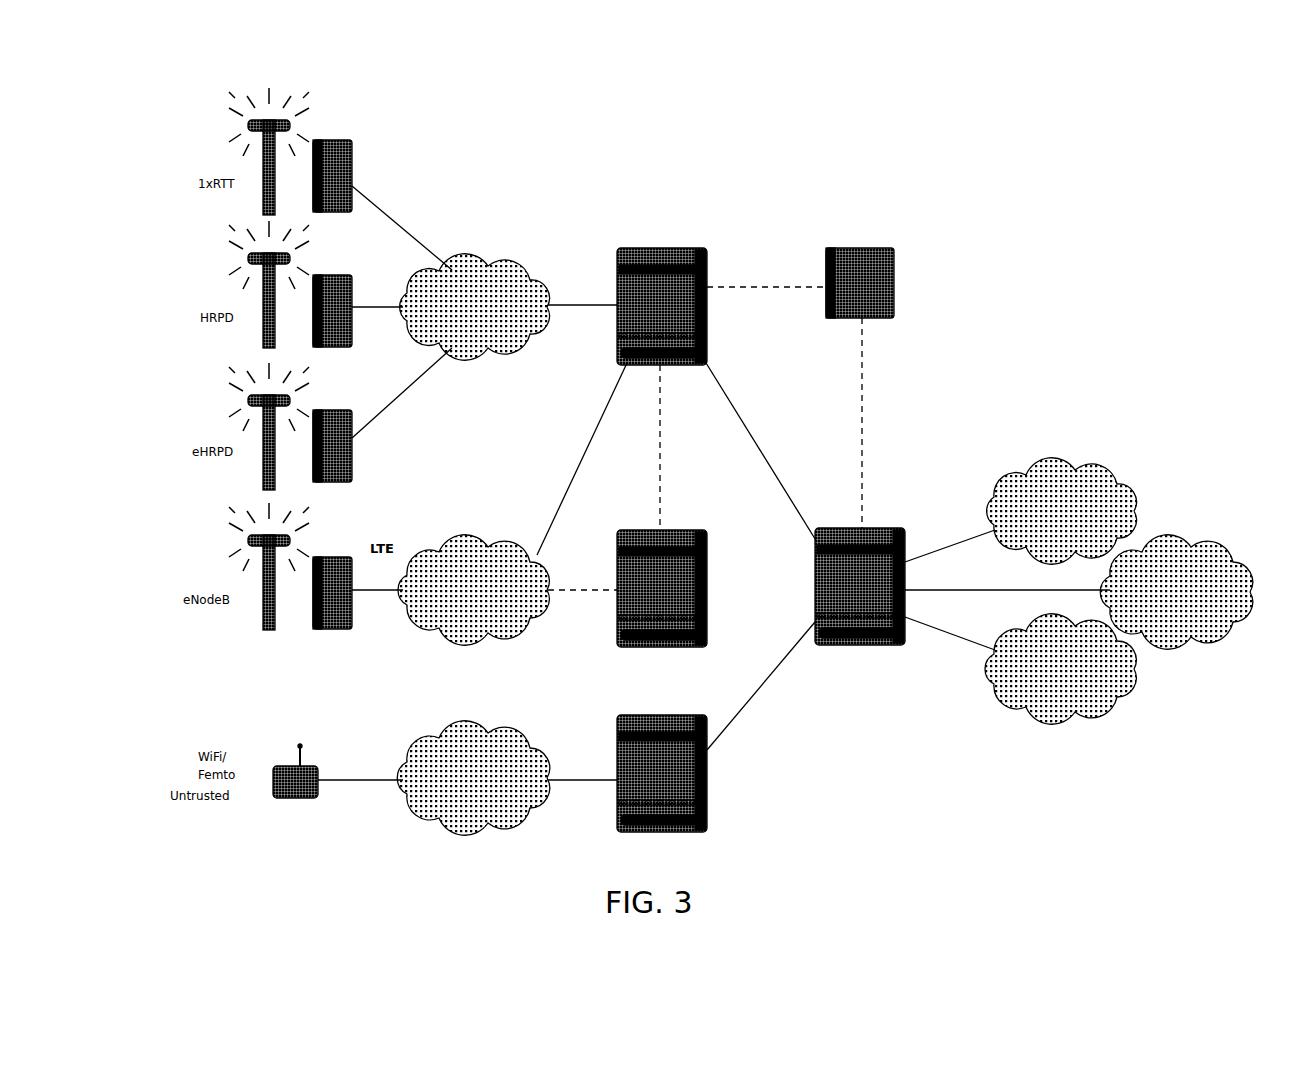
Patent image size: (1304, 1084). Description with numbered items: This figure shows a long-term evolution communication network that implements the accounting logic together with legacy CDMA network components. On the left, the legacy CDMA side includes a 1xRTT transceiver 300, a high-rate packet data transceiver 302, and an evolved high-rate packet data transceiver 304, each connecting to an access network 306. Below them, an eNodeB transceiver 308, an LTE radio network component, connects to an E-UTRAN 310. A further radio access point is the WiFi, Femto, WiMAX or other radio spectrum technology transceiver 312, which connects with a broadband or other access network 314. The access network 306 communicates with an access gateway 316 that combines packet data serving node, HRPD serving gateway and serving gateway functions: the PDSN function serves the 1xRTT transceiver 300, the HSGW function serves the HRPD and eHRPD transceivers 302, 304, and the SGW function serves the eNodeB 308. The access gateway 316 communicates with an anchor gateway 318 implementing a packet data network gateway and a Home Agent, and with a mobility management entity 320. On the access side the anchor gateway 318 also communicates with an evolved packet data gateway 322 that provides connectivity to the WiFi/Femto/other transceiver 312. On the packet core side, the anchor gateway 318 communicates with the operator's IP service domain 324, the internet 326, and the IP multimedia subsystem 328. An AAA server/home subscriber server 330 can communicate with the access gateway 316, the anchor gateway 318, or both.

The 1xRTT transceiver 300 is at (350, 150).
The high-rate packet data (HRPD) transceiver 302 is at (350, 283).
The evolved high-rate packet data (eHRPD) transceiver 304 is at (350, 420).
The access network 306 is at (490, 263).
The evolved Node B (eNodeB) transceiver 308 is at (330, 557).
The Evolved UMTS Terrestrial Radio Access Network (E-UTRAN) 310 is at (482, 545).
The WiFi, Femto, WiMAX or other radio spectrum technology transceiver 312 is at (307, 766).
The WiFi/Femto/Other network 314 is at (480, 733).
The access gateway 316 is at (705, 262).
The anchor gateway 318 is at (892, 528).
The mobility management entity (MME) 320 is at (705, 545).
The ePDG 322 is at (688, 715).
The operator's IP service domain 324 is at (1136, 666).
The internet 326 is at (1108, 482).
The IP multimedia subsystem (IMS) 328 is at (1222, 560).
The authentication, authorization, and accounting (AAA) server/home subscriber serve 330 is at (893, 262).